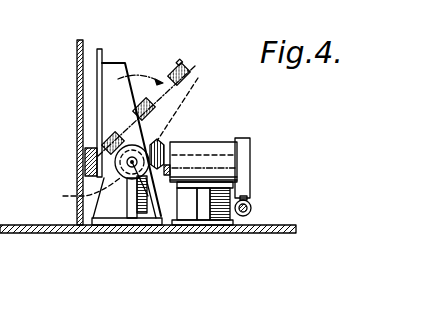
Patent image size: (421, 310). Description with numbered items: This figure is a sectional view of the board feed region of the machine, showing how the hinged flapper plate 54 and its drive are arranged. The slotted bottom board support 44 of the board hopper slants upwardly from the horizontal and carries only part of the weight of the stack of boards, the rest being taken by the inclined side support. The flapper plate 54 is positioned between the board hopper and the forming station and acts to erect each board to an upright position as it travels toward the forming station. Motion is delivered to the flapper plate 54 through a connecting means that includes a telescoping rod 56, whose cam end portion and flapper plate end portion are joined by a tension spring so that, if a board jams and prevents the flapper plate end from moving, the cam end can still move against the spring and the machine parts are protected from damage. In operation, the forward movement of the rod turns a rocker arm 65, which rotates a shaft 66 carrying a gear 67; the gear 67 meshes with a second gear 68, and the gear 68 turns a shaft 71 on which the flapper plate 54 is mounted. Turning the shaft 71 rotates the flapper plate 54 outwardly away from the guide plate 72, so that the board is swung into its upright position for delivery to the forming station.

The guide plate 72 is at (84, 42).
The hinged flapper plate 54 is at (113, 65).
The slotted bottom board support 44 is at (188, 66).
The gear 67 is at (158, 140).
The shaft 66 is at (210, 155).
The rocker arm 65 is at (249, 189).
The telescoping rod 56 is at (252, 208).
The gear 68 is at (80, 192).
The shaft 71 is at (141, 177).